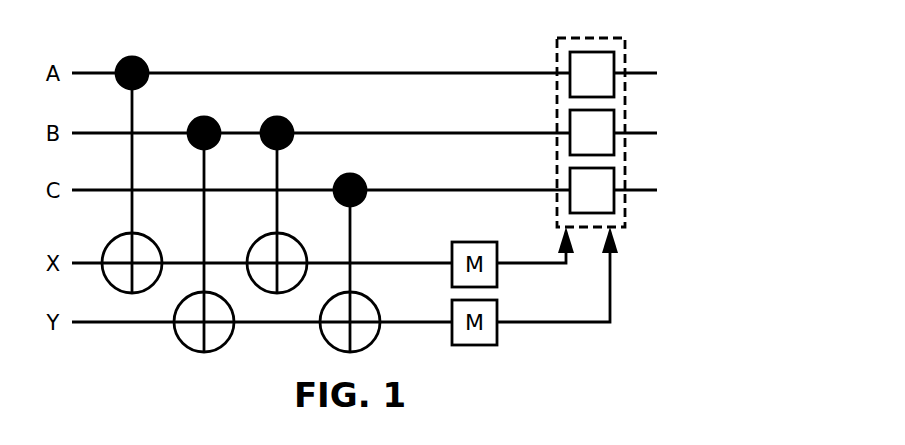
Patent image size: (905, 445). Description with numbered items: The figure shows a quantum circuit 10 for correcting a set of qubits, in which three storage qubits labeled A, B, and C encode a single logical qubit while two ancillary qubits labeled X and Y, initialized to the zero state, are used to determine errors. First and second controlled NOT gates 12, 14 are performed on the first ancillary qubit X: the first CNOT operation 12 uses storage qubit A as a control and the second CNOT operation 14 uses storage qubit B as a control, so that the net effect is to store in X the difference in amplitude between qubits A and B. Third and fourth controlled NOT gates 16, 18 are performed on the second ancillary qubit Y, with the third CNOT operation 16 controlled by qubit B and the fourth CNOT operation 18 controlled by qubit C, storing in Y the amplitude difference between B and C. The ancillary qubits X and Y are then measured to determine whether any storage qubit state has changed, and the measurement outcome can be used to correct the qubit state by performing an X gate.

The quantum circuit 10 is at (676, 23).
The first controlled NOT gate 12 is at (132, 118).
The second controlled NOT gate 14 is at (277, 168).
The third controlled NOT gate 16 is at (204, 233).
The fourth controlled NOT gate 18 is at (350, 233).